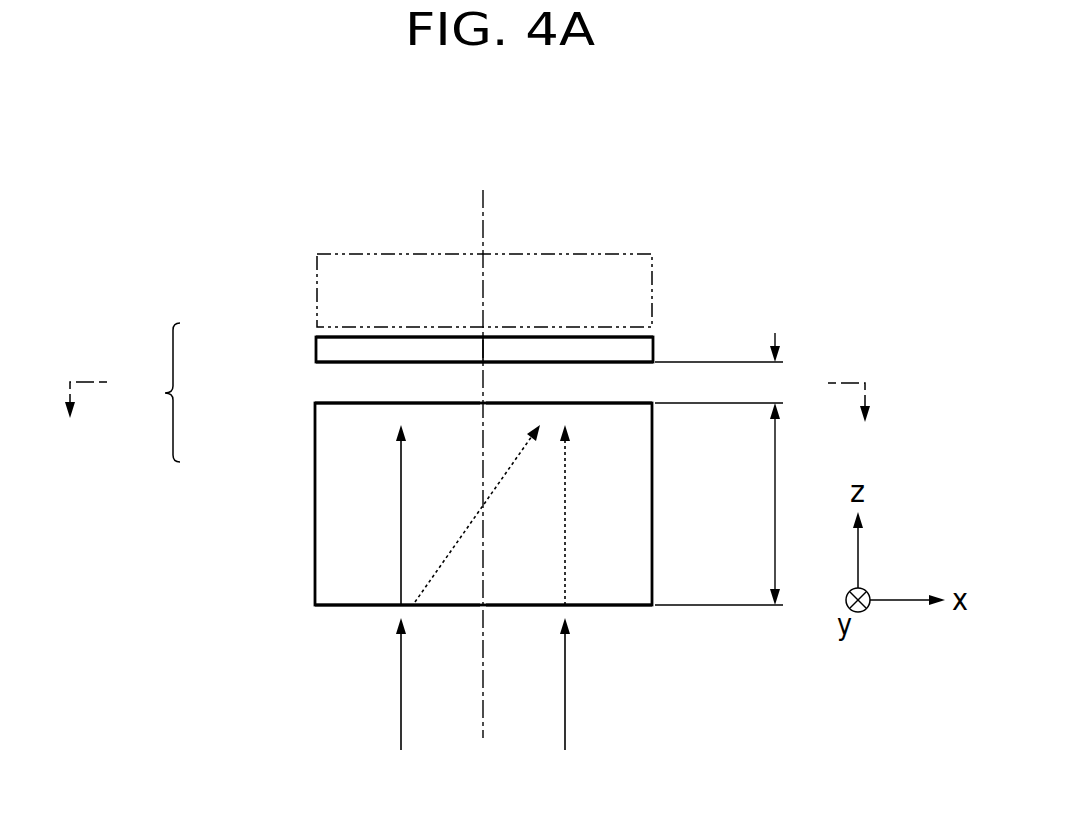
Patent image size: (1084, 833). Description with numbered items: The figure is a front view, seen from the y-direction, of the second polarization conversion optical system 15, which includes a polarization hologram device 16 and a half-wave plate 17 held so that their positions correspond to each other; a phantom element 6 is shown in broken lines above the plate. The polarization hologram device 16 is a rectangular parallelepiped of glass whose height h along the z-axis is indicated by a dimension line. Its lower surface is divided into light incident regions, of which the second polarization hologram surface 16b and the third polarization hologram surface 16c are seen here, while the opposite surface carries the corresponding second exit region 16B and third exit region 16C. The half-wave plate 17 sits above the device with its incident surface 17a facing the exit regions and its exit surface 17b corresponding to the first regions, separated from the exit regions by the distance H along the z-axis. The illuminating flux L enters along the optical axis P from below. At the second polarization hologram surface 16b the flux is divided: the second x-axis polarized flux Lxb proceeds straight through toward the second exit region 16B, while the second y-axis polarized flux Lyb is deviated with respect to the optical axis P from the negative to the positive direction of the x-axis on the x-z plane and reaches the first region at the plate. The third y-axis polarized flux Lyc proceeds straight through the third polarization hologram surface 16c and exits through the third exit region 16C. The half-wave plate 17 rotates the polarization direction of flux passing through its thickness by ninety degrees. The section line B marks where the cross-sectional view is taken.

The optical element (phantom) 6 is at (652, 290).
The second polarization conversion optical system 15 is at (158, 410).
The polarization hologram device 16 is at (313, 493).
The second exit region 16B is at (316, 403).
The third exit region 16C is at (590, 403).
The second polarization hologram surface 16b is at (353, 607).
The third polarization hologram surface 16c is at (597, 607).
The half-wave plate 17 is at (316, 352).
The incident surface 17a is at (430, 363).
The exit surface 17b is at (343, 336).
The optical axis P is at (483, 218).
The illuminating flux L is at (400, 735).
The second x-axis polarized flux Lxb is at (401, 530).
The second y-axis polarized flux Lyb is at (435, 580).
The third y-axis polarized flux Lyc is at (565, 537).
The distance H is at (729, 368).
The height h is at (729, 504).
The line B- B is at (470, 388).